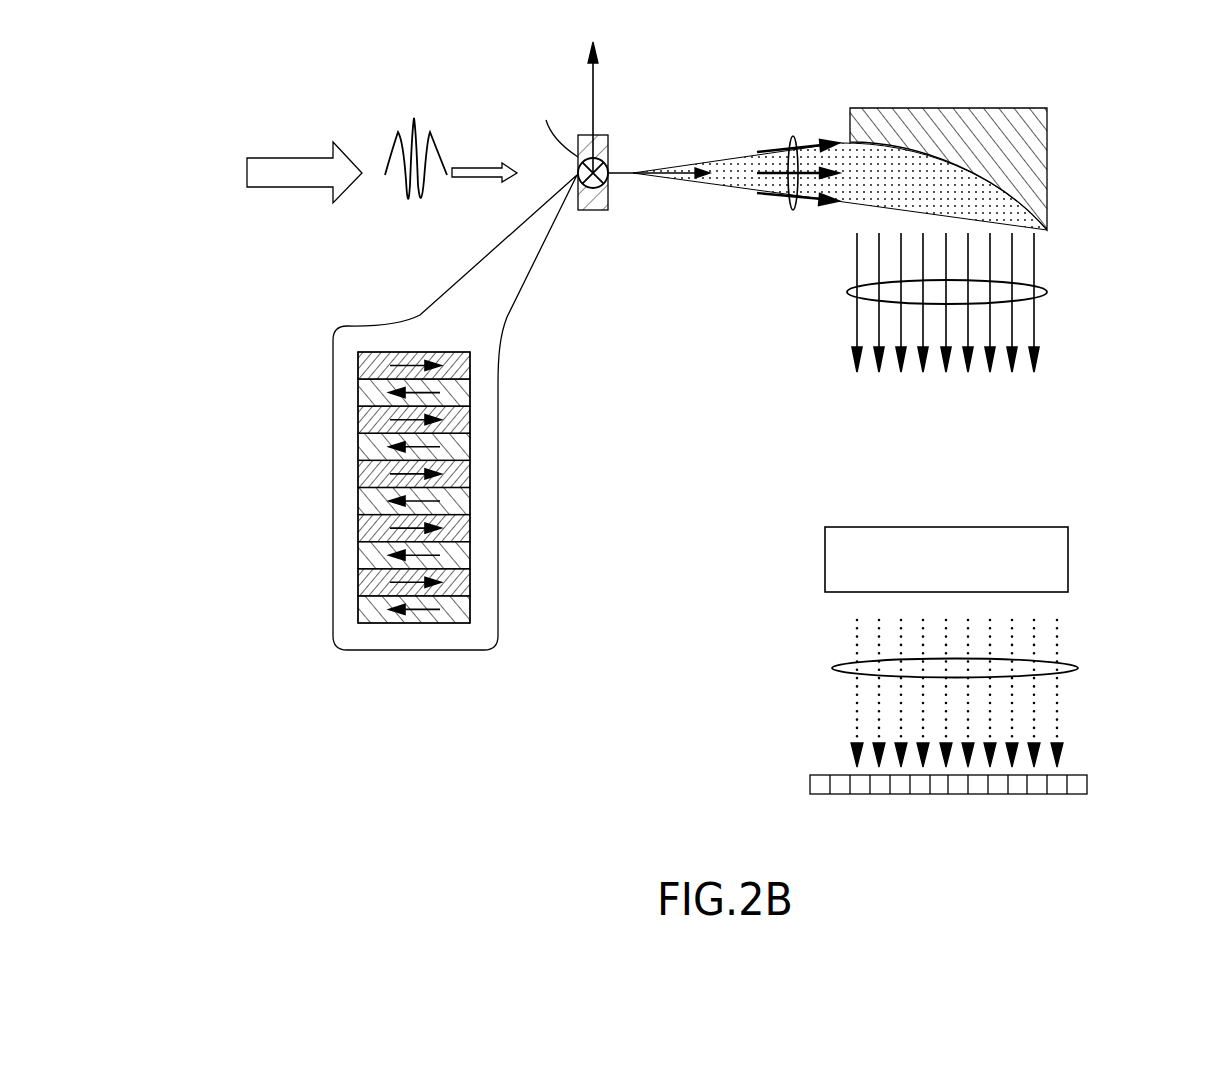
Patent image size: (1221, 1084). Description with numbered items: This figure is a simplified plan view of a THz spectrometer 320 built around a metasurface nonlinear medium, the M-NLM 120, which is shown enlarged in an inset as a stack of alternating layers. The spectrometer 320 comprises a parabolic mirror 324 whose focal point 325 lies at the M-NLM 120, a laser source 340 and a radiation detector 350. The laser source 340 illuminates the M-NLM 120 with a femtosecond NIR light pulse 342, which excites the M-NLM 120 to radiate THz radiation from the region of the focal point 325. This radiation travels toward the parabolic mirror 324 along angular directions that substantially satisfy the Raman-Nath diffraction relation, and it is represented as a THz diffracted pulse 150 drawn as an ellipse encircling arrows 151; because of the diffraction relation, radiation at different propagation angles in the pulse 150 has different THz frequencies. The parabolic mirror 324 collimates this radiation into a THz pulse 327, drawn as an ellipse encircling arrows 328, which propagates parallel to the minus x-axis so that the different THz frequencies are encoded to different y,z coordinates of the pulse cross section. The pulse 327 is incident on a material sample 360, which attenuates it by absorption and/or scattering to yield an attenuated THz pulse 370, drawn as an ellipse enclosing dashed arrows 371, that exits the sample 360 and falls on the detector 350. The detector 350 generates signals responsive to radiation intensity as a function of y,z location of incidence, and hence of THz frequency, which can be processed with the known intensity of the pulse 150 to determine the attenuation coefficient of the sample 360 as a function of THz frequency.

The M-NLM 120 is at (572, 112).
The laser source 340 is at (320, 157).
The femtosecond NIR light pulse 342 is at (402, 133).
The focal point 325 is at (590, 192).
The arrows 151 is at (780, 150).
The THz diffracted pulse 150 is at (787, 200).
The THz spectrometer 320 is at (927, 118).
The parabolic mirror 324 is at (1036, 150).
The THz pulse 327 is at (840, 290).
The arrows 328 is at (878, 327).
The material sample 360 is at (920, 528).
The attenuated THz pulse 370 is at (827, 665).
The dashed arrows 371 is at (923, 723).
The radiation detector 350 is at (1095, 782).